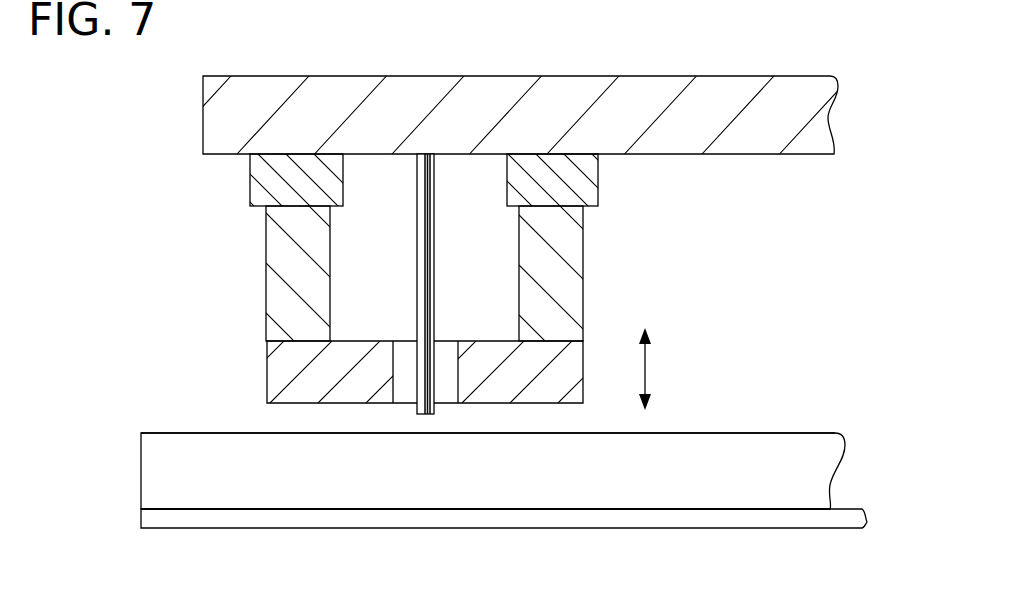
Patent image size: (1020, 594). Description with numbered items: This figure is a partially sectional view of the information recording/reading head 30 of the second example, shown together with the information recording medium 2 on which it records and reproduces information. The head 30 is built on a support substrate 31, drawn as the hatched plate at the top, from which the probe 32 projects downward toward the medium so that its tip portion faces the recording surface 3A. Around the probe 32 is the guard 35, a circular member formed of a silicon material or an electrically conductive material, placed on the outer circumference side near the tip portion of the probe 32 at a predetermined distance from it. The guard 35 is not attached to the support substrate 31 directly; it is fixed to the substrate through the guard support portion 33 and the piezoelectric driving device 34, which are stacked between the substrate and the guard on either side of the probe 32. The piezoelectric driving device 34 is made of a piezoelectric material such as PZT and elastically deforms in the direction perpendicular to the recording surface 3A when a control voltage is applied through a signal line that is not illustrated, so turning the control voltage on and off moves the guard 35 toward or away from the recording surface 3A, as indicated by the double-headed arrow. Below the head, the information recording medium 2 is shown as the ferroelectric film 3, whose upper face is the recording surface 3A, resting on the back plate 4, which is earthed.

The information recording/reading head 30 is at (790, 50).
The support substrate 31 is at (215, 108).
The probe 32 is at (423, 414).
The guard support portion 33 is at (593, 193).
The piezoelectric driving device 34 is at (277, 252).
The guard 35 is at (268, 363).
The information recording medium 2 is at (774, 543).
The ferroelectric film 3 is at (478, 443).
The recording surface 3A is at (745, 432).
The back plate 4 is at (182, 520).